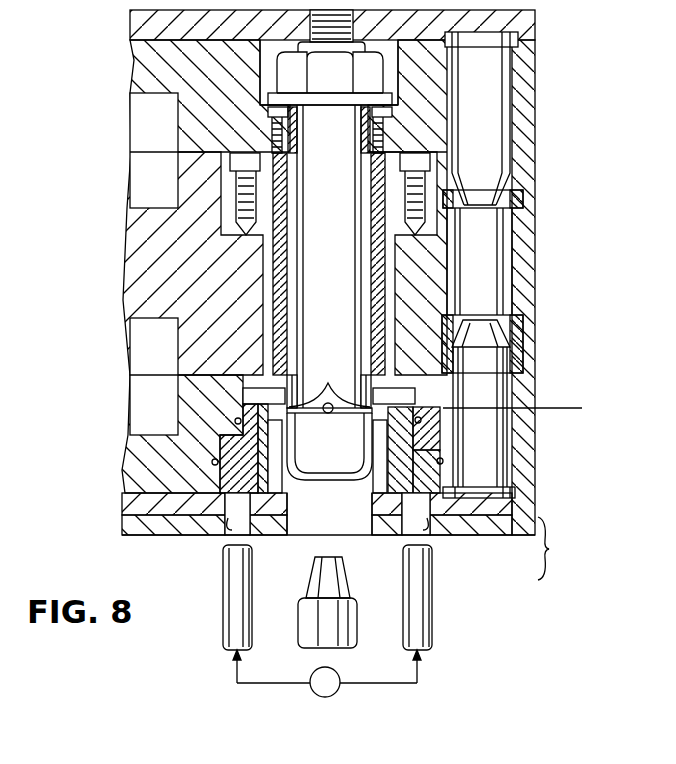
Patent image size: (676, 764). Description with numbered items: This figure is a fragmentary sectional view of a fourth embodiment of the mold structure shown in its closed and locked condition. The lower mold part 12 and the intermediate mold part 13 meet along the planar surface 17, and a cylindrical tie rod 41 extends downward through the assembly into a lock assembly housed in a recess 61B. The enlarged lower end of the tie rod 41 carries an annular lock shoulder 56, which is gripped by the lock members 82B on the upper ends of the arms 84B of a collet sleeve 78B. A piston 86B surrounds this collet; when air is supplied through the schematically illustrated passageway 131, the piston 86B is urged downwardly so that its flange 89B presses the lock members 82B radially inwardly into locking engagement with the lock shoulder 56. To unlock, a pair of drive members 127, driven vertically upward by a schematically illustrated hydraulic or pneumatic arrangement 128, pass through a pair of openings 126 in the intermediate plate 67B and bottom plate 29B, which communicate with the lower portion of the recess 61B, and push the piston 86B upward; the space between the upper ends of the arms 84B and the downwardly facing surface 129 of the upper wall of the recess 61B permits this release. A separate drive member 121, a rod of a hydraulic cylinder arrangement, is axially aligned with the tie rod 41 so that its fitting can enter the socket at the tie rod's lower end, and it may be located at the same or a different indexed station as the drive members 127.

The lower mold part 12 is at (528, 393).
The intermediate mold part 13 is at (524, 241).
The planar surface 17 is at (522, 110).
The bottom plate 29B is at (128, 523).
The tie rod 41 is at (329, 209).
The lock shoulder 56 is at (329, 431).
The recess 61B is at (438, 430).
The intermediate plate 67B is at (135, 502).
The collet sleeve 78B is at (366, 521).
The lock members 82B is at (326, 382).
The arms 84B is at (327, 467).
The piston 86B is at (413, 477).
The flange 89B is at (368, 376).
The drive member 121 is at (317, 625).
The openings 126 is at (230, 527).
The drive members 127 is at (235, 627).
The hydraulic or pneumatic arrangement 128 is at (318, 692).
The downwardly facing surface 129 is at (442, 385).
The passageway 131 is at (548, 408).